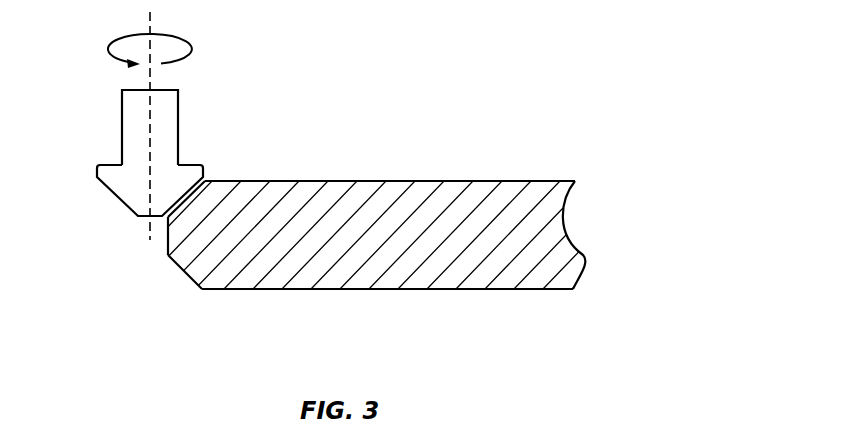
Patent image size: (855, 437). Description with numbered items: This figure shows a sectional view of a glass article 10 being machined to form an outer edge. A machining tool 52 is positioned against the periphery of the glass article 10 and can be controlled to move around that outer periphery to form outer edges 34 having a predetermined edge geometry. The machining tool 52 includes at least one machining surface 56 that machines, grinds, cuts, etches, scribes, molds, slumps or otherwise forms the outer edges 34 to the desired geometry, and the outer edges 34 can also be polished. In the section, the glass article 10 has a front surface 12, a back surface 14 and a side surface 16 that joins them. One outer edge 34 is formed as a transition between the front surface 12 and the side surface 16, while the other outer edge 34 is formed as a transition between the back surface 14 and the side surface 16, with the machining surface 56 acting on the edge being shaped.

The glass article 10 is at (451, 47).
The front surface 12 is at (403, 181).
The back surface 14 is at (383, 291).
The side surface 16 is at (168, 226).
The outer edges 34 is at (202, 189).
The machining tool 52 is at (133, 124).
The machining surface 56 is at (115, 198).